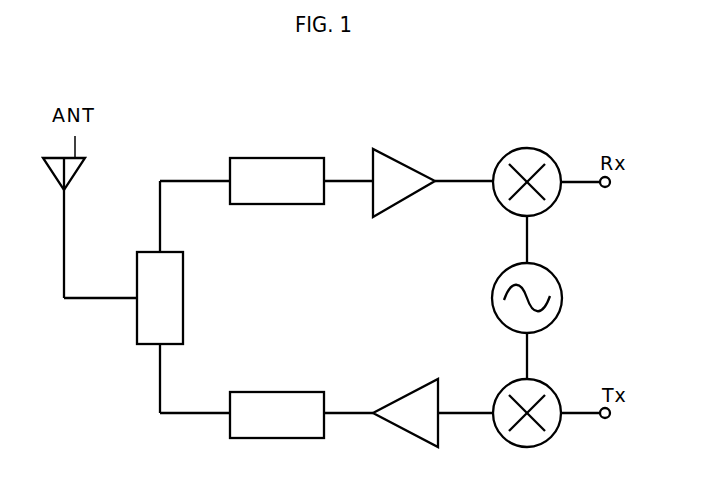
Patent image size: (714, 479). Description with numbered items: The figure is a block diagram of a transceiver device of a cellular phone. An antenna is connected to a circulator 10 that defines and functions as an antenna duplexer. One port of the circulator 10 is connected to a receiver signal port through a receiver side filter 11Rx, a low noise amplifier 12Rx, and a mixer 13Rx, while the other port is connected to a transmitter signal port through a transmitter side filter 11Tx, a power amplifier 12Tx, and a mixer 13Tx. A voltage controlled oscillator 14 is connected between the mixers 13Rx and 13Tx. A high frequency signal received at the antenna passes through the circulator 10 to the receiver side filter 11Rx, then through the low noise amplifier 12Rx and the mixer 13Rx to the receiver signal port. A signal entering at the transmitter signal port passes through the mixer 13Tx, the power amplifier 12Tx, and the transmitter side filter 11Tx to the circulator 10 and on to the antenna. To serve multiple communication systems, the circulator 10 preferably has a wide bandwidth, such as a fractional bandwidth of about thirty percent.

The circulator 10 is at (183, 298).
The receiver side filter 11Rx is at (275, 158).
The low noise amplifier 12Rx is at (403, 164).
The mixer 13Rx is at (549, 152).
The voltage controlled oscillator 14 is at (547, 267).
The mixer 13Tx is at (549, 383).
The power amplifier 12Tx is at (403, 396).
The transmitter side filter 11Tx is at (275, 392).